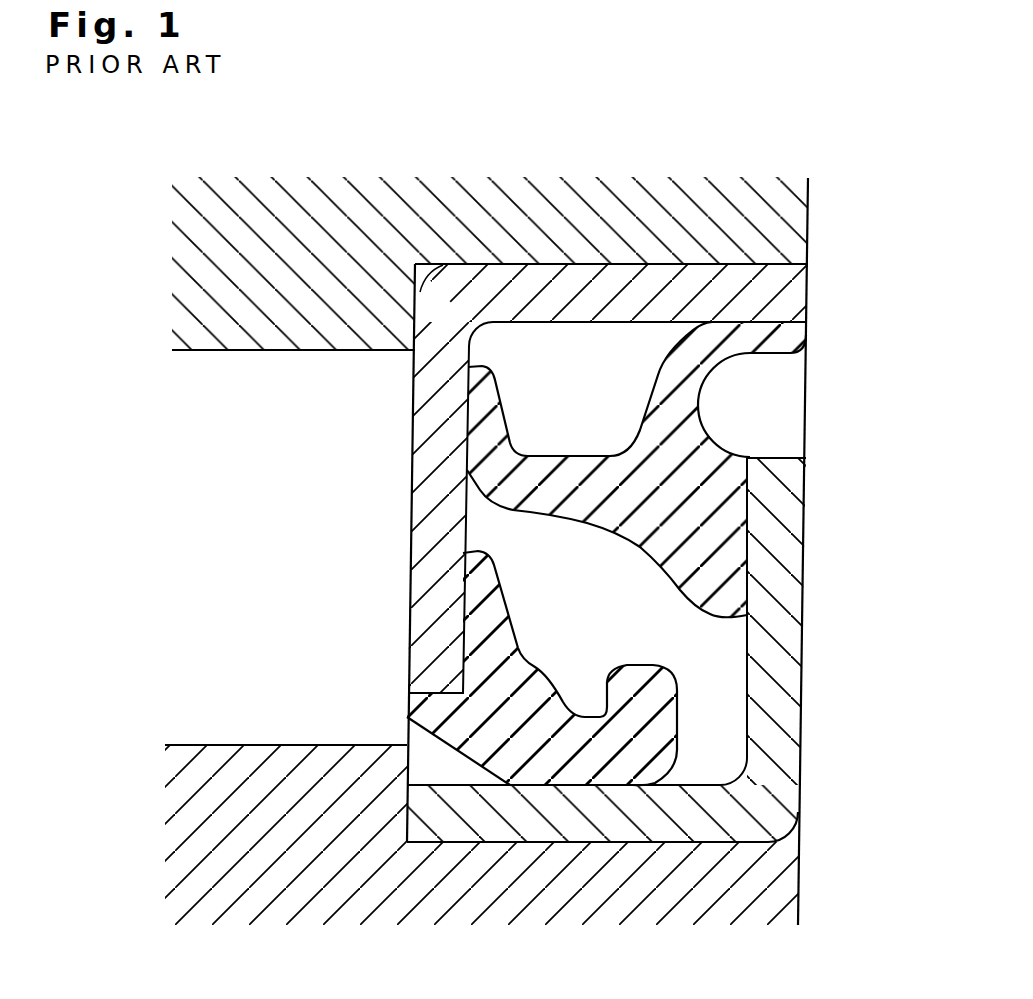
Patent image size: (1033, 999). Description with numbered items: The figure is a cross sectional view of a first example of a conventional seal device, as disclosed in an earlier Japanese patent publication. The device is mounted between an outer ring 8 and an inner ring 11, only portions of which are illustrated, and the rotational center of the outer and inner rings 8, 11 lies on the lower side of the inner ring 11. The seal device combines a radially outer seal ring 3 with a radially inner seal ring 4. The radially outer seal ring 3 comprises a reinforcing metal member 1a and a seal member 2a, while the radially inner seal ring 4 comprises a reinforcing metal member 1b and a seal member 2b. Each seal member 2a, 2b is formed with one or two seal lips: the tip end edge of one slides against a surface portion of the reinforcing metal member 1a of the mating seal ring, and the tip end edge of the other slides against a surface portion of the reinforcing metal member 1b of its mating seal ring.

The reinforcing metal member 1a is at (610, 303).
The reinforcing metal member 1b is at (773, 773).
The seal member 2a is at (752, 345).
The seal member 2b is at (435, 715).
The radially outer seal ring 3 is at (408, 437).
The radially inner seal ring 4 is at (805, 667).
The outer ring 8 is at (370, 257).
The inner ring 11 is at (398, 860).